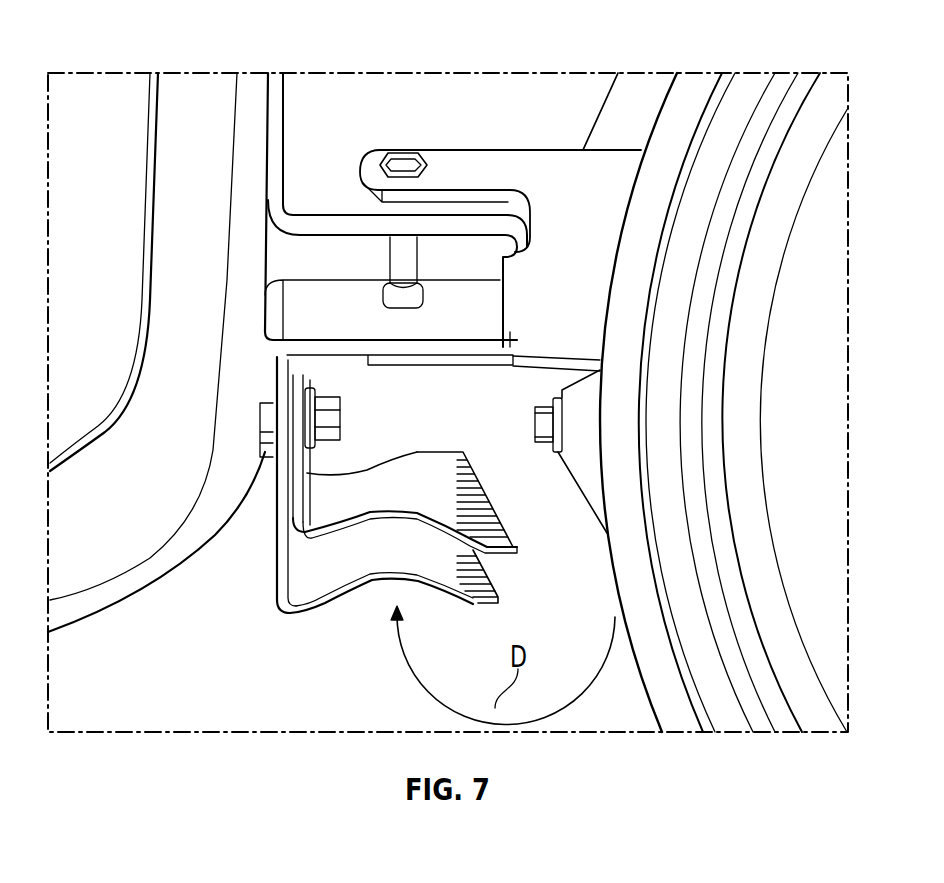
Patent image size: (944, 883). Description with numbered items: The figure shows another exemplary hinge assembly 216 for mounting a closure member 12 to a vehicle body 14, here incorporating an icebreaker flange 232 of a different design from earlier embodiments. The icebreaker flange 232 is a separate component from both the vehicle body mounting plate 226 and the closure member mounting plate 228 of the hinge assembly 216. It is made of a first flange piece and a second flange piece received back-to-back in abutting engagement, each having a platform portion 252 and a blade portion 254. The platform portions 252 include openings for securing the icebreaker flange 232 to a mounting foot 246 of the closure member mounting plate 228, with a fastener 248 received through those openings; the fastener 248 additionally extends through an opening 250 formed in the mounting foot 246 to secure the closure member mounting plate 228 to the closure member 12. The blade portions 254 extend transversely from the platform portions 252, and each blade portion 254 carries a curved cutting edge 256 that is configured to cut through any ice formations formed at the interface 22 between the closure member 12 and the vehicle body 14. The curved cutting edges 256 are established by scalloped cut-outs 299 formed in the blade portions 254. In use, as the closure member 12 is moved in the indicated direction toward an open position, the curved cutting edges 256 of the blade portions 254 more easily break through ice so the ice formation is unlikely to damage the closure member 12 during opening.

The closure member 12 is at (192, 96).
The vehicle body 14 is at (645, 92).
The interface 22 is at (557, 503).
The hinge assembly 216 is at (441, 152).
The vehicle body mounting plate 226 is at (571, 184).
The closure member mounting plate 228 is at (300, 201).
The icebreaker flange 232 is at (282, 588).
The mounting foot 246 is at (268, 357).
The fastener 248 is at (340, 410).
The opening 250 is at (268, 414).
The platform portion 252 is at (280, 514).
The blade portion 254 is at (470, 488).
The curved cutting edge 256 is at (366, 470).
The scalloped cut-out 299 is at (390, 513).